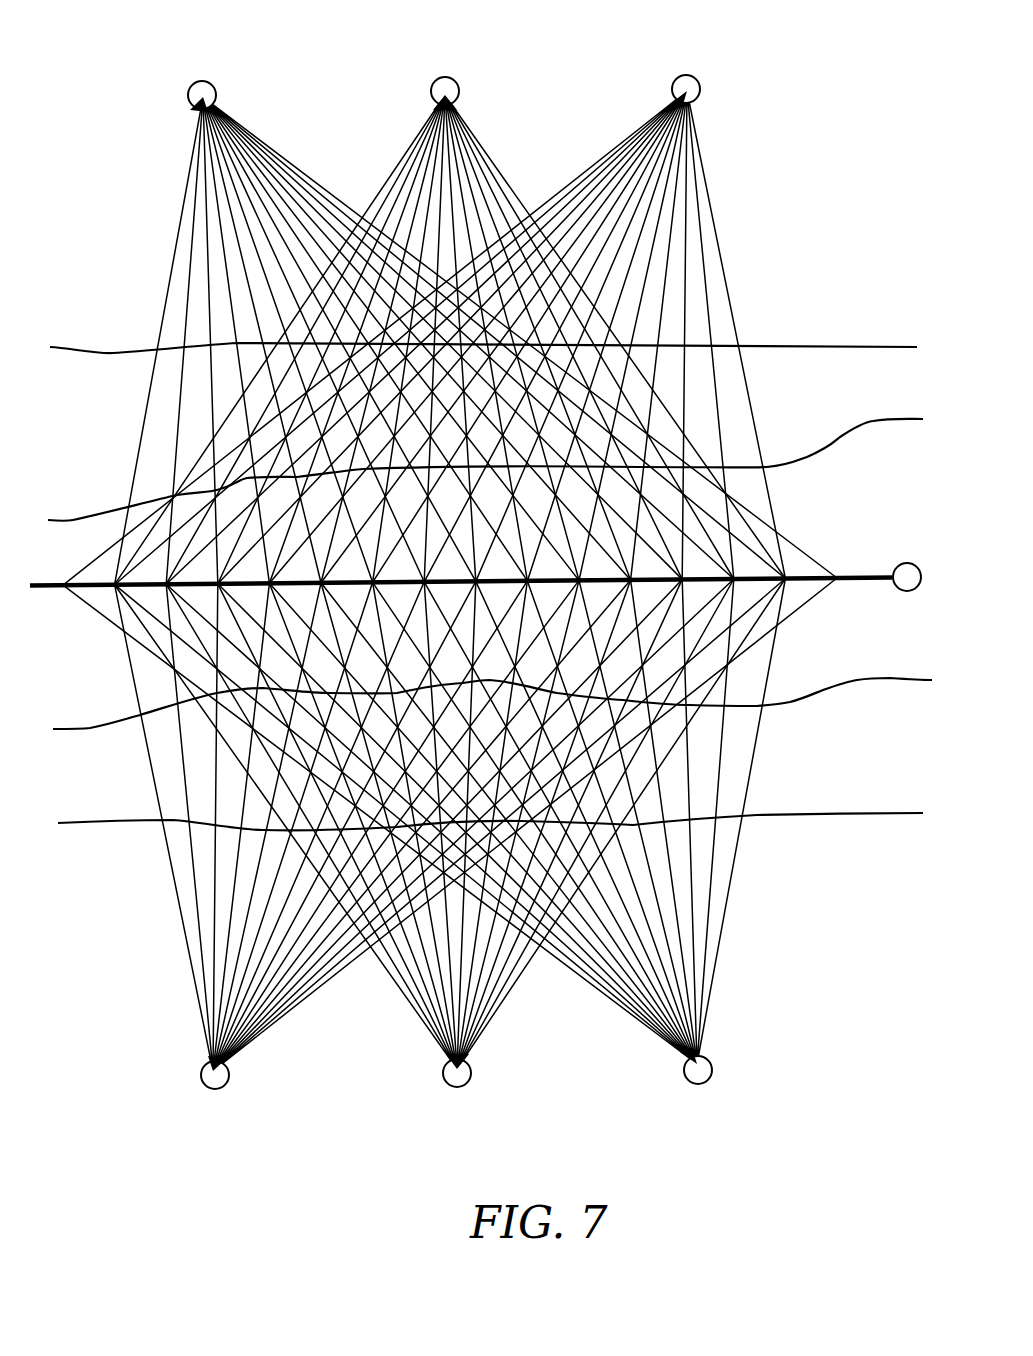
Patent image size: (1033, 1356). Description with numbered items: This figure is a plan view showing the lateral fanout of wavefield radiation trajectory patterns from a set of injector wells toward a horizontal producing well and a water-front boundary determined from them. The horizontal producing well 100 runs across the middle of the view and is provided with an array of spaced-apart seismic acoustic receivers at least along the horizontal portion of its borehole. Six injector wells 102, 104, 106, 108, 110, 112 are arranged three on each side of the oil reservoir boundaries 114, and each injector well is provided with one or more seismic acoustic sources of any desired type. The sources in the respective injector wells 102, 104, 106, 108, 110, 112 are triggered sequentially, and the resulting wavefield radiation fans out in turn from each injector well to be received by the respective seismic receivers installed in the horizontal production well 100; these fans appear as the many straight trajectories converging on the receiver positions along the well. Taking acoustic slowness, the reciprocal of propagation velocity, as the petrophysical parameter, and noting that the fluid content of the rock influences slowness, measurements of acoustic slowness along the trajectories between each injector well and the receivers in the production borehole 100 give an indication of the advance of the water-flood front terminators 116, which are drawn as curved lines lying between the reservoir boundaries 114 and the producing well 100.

The horizontal producing well 100 is at (908, 561).
The injector well 102 is at (212, 1091).
The injector well 104 is at (455, 1088).
The injector well 106 is at (697, 1085).
The injector well 108 is at (201, 80).
The injector well 110 is at (444, 77).
The injector well 112 is at (689, 73).
The oil reservoir boundaries 114 is at (80, 345).
The water-flood front terminators 116 is at (83, 518).